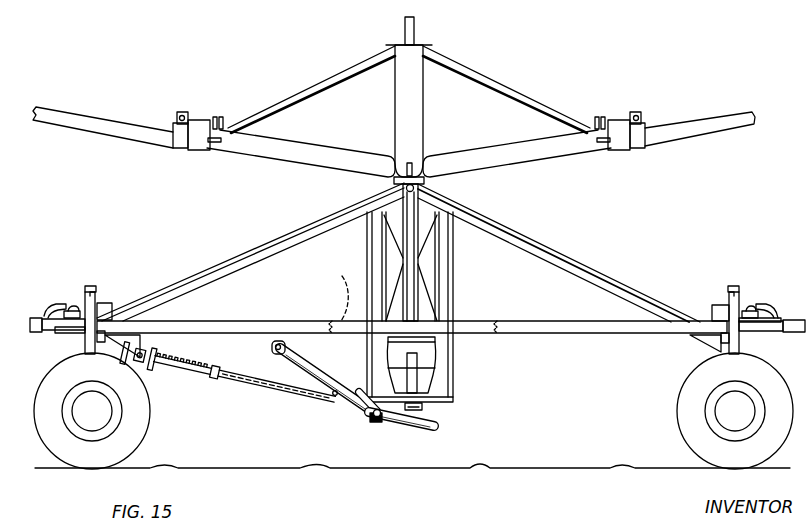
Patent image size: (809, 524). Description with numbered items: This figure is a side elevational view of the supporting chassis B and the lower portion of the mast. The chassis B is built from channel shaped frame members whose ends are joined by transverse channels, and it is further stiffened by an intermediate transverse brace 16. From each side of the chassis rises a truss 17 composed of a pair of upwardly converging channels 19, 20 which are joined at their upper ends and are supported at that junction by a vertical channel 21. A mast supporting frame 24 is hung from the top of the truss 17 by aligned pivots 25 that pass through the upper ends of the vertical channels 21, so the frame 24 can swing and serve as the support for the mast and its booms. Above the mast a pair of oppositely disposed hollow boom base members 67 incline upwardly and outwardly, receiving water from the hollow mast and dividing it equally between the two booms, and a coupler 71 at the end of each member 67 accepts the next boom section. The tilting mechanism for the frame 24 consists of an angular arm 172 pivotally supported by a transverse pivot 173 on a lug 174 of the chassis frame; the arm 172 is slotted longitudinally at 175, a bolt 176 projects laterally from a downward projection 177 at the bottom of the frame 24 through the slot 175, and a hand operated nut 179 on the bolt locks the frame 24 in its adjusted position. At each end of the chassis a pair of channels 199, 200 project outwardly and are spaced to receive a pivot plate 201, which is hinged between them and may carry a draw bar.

The intermediate transverse brace 16 is at (330, 297).
The truss 17 is at (276, 234).
The upwardly converging channel 19 is at (298, 237).
The upwardly converging channel 20 is at (522, 228).
The vertical channel 21 is at (427, 266).
The mast supporting frame 24 is at (462, 381).
The aligned pivot 25 is at (420, 187).
The boom base member 67 is at (321, 153).
The coupler 71 is at (201, 125).
The angular arm 172 is at (312, 380).
The transverse pivot 173 is at (268, 348).
The lug 174 is at (281, 342).
The slot 175 is at (332, 397).
The bolt 176 is at (367, 423).
The downward projection 177 is at (361, 392).
The hand operated nut 179 is at (375, 423).
The channel 199 is at (72, 335).
The channel 200 is at (66, 311).
The pivot plate 201 is at (45, 315).
The supporting chassis B is at (602, 314).